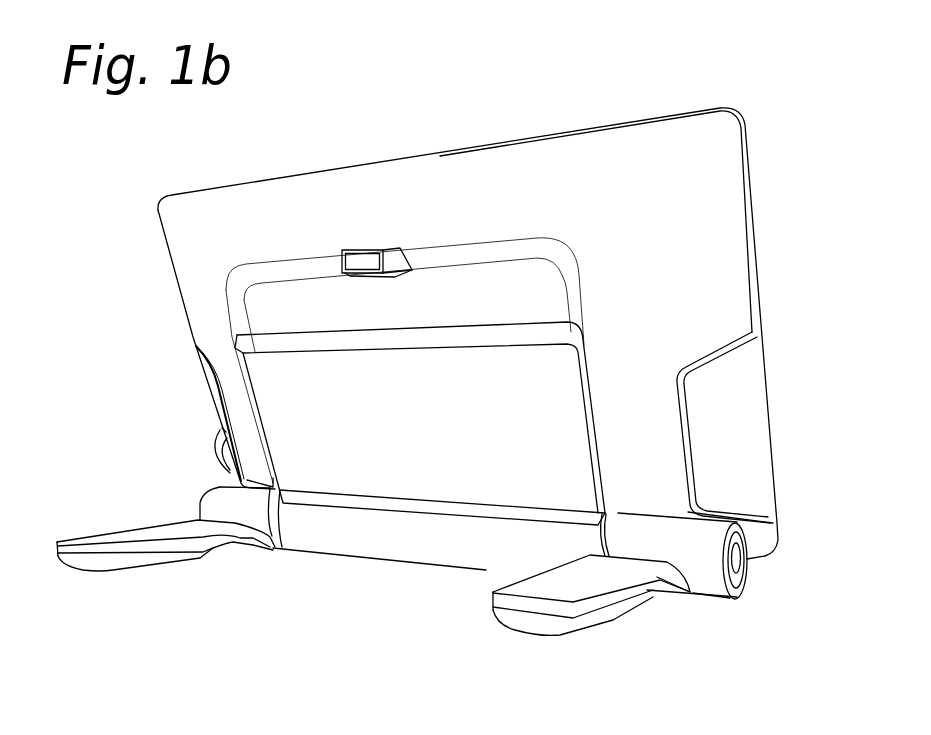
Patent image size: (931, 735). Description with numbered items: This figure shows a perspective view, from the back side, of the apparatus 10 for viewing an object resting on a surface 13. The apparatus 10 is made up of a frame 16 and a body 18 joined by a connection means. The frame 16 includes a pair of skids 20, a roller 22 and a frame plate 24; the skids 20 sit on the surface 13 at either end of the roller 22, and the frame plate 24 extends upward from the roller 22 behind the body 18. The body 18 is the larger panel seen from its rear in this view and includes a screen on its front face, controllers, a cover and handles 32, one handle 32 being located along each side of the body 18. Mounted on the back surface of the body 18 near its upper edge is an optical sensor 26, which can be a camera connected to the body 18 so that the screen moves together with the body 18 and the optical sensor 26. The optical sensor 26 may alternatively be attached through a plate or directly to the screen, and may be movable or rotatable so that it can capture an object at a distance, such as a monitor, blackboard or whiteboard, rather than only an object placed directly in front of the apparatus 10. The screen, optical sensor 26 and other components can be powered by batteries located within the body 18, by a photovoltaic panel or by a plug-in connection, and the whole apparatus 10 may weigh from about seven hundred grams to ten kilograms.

The apparatus 10 is at (131, 243).
The surface 13 is at (678, 627).
The frame 16 is at (180, 446).
The body 18 is at (167, 288).
The skids 20 is at (164, 566).
The roller 22 is at (375, 568).
The frame plate 24 is at (493, 473).
The optical sensor 26 is at (375, 263).
The handles 32 is at (215, 400).